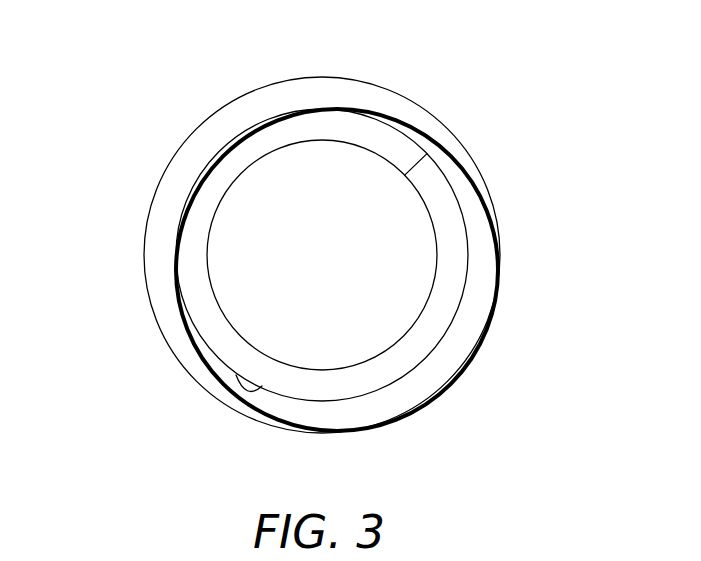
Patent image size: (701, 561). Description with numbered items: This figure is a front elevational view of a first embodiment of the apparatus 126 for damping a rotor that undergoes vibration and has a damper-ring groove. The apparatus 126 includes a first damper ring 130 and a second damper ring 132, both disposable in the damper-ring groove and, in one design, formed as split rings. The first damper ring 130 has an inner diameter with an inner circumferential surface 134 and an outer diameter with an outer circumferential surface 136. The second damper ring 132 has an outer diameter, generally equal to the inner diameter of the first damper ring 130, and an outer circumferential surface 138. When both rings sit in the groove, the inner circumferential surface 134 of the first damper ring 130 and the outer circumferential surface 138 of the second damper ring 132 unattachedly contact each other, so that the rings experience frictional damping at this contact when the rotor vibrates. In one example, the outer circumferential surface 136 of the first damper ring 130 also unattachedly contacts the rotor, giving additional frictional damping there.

The apparatus 126 is at (312, 232).
The first damper ring 130 is at (173, 190).
The second damper ring 132 is at (197, 292).
The inner circumferential surface 134 is at (465, 238).
The outer circumferential surface 136 is at (441, 389).
The outer circumferential surface 138 is at (258, 389).